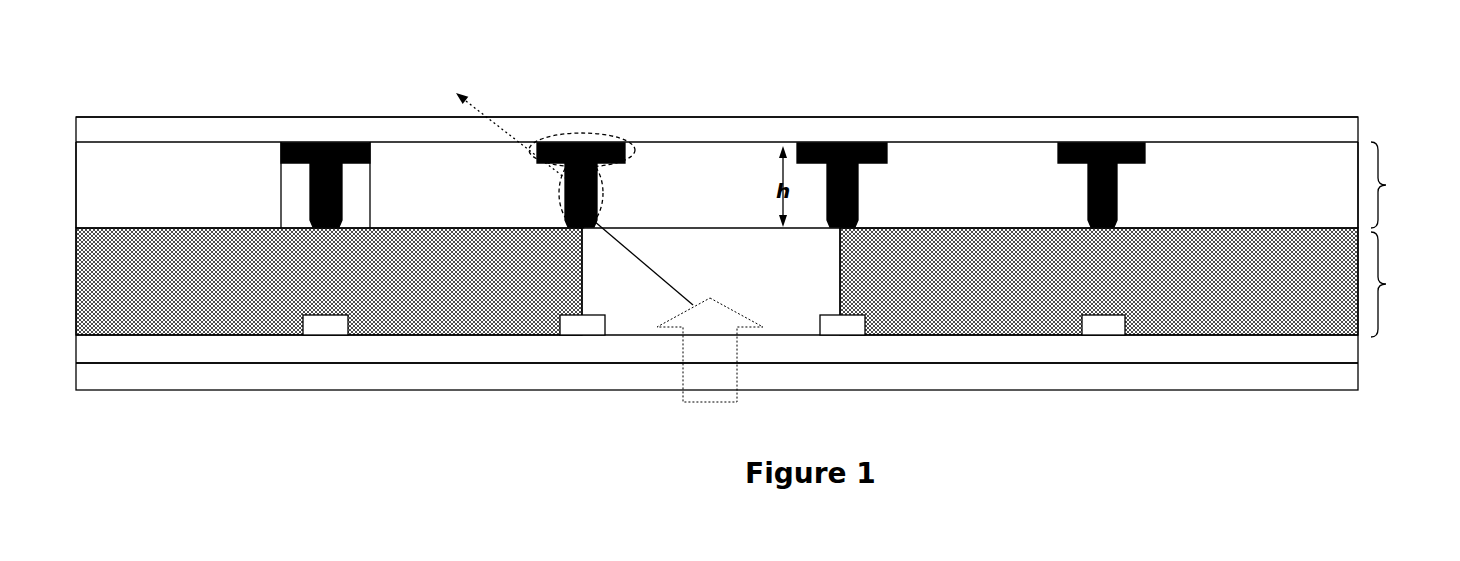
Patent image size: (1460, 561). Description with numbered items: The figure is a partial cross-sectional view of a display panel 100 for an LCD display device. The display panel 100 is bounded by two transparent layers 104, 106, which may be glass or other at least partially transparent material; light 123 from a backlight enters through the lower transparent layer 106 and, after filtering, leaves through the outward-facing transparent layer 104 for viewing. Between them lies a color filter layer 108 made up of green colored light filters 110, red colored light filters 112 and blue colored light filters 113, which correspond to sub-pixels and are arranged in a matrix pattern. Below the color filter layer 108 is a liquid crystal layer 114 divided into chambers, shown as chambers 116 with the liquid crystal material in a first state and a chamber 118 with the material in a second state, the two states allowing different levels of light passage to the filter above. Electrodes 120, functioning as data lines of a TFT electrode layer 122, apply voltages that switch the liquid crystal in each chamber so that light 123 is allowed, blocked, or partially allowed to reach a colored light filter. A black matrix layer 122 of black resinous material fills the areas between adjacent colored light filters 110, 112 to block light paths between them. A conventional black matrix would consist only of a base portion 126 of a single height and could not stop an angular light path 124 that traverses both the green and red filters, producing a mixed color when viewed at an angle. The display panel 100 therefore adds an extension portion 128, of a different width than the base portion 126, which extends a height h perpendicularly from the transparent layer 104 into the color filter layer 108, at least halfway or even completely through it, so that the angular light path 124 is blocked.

The display panel 100 is at (212, 56).
The transparent layer 104 is at (1230, 117).
The transparent layer 106 is at (1065, 390).
The color filter layer 108 is at (1386, 185).
The green colored light filter 110 is at (711, 185).
The red colored light filter 112 is at (864, 185).
The blue colored light filter 113 is at (536, 185).
The liquid crystal layer 114 is at (1386, 284).
The chamber 116 is at (229, 290).
The chamber 118 is at (776, 310).
The electrode 120 is at (557, 333).
The black matrix layer 122 is at (608, 119).
The light 123 is at (705, 402).
The light path 124 is at (466, 99).
The base portion 126 is at (566, 133).
The extension portion 128 is at (600, 185).